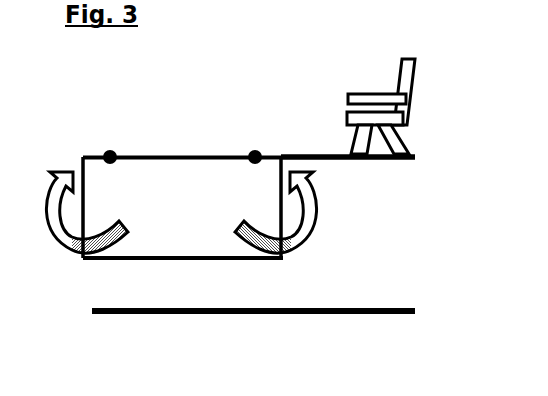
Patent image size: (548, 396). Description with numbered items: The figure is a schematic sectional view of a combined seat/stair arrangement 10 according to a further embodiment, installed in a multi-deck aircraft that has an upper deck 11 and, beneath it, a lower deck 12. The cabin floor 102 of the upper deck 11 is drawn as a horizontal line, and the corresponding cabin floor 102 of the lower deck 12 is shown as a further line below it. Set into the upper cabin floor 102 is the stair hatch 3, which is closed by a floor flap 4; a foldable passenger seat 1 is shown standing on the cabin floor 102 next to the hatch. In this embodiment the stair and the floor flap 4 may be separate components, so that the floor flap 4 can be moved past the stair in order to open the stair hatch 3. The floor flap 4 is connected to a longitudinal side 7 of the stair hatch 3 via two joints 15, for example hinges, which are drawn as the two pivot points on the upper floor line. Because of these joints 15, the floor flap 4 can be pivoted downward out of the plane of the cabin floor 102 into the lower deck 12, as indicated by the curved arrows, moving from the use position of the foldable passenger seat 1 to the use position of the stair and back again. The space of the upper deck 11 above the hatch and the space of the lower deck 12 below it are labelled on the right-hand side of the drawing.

The foldable passenger seat 1 is at (402, 60).
The stair hatch 3 is at (186, 146).
The floor flap 4 is at (113, 260).
The longitudinal side 7 is at (145, 157).
The combined seat/stair arrangement 10 is at (75, 96).
The upper deck 11 is at (315, 136).
The lower deck 12 is at (383, 258).
The joint 15 is at (248, 153).
The cabin floor 102 is at (382, 163).